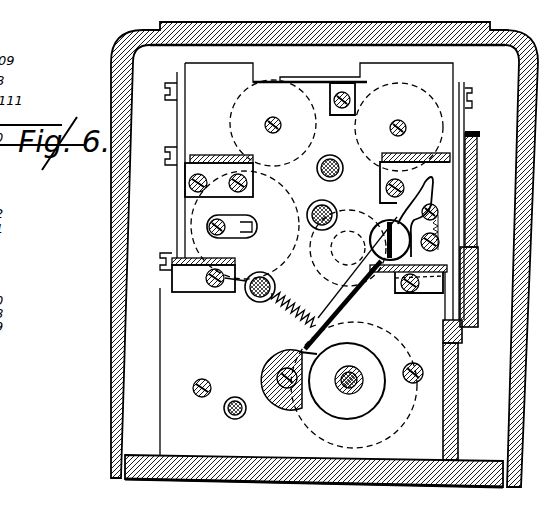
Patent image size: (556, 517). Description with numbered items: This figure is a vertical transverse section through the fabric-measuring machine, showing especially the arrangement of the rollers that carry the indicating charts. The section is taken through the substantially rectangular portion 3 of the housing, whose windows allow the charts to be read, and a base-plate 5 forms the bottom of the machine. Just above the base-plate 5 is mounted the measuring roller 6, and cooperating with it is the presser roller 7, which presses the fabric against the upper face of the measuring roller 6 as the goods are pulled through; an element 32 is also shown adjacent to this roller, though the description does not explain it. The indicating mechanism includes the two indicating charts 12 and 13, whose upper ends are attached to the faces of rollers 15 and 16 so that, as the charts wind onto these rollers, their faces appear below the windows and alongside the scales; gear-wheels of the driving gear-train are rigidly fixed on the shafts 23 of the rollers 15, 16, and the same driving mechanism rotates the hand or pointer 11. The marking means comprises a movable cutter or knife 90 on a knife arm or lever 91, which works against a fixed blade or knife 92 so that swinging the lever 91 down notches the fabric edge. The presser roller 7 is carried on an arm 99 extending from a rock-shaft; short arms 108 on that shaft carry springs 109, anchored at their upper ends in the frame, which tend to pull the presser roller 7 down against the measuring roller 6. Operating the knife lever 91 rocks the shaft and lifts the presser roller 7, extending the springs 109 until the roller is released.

The rectangular portion 3 is at (531, 380).
The base-plate 5 is at (377, 486).
The measuring roller 6 is at (409, 417).
The presser roller 7 is at (365, 284).
The hand or pointer 11 is at (281, 250).
The indicating chart 12 is at (282, 174).
The indicating chart 13 is at (322, 186).
The roller 15 is at (238, 124).
The roller 16 is at (416, 88).
The shaft 23 is at (267, 121).
The wheel 32 is at (340, 397).
The movable cutter or knife 90 is at (467, 306).
The knife arm or lever 91 is at (474, 184).
The fixed blade or knife 92 is at (459, 352).
The arm 99 is at (405, 293).
The short arm 108 is at (442, 277).
The spring 109 is at (437, 232).